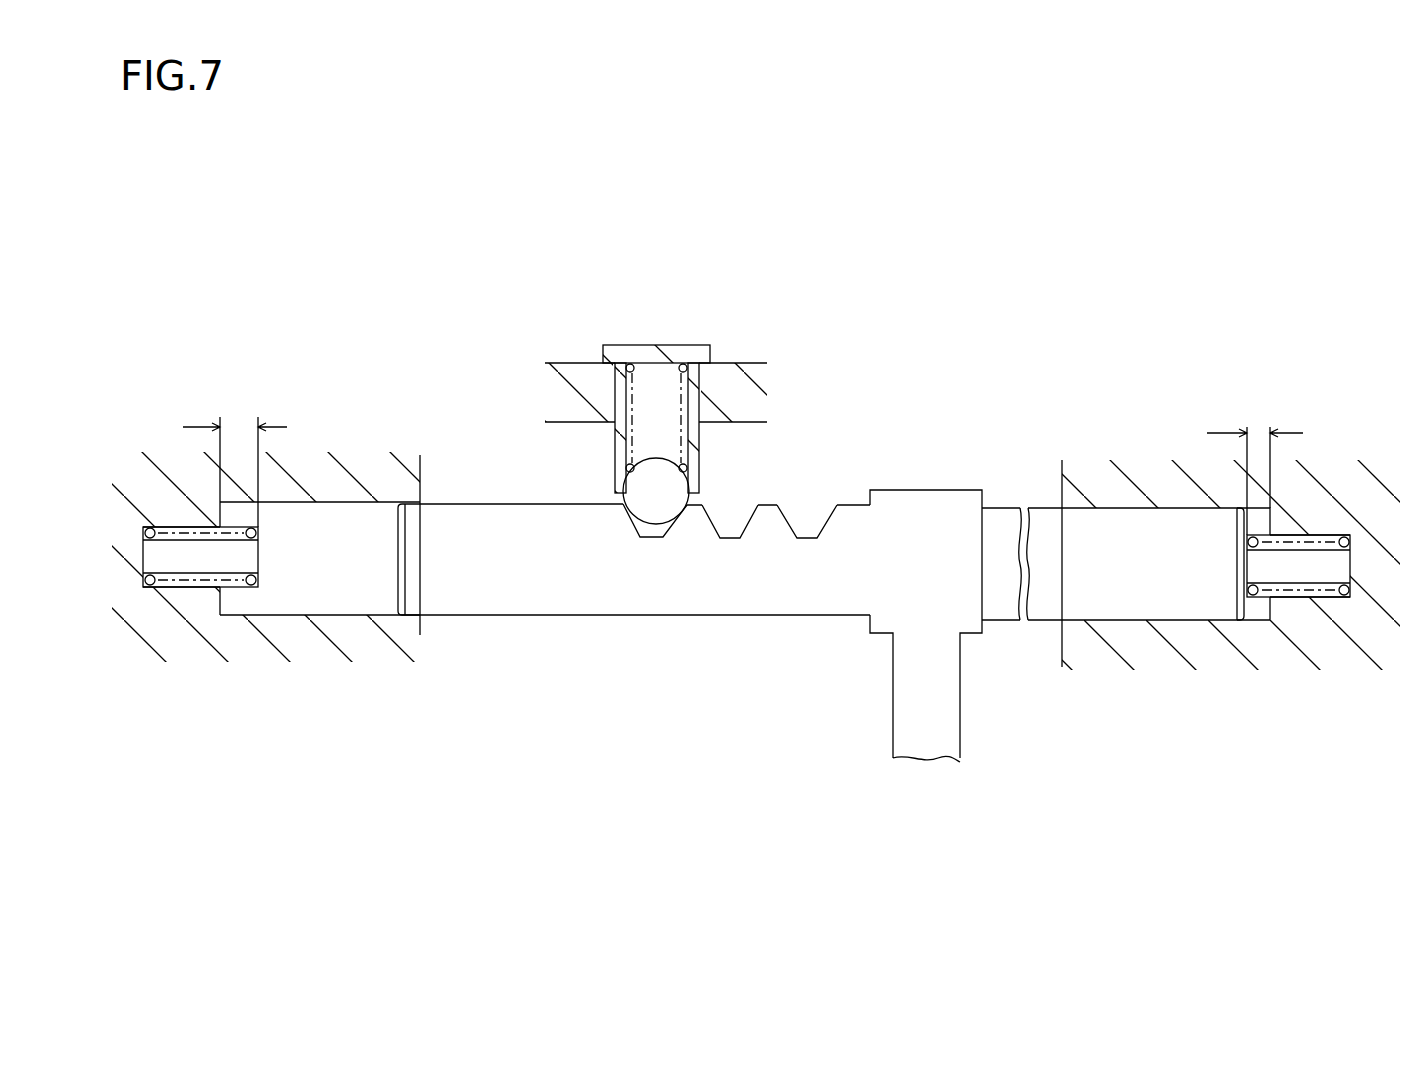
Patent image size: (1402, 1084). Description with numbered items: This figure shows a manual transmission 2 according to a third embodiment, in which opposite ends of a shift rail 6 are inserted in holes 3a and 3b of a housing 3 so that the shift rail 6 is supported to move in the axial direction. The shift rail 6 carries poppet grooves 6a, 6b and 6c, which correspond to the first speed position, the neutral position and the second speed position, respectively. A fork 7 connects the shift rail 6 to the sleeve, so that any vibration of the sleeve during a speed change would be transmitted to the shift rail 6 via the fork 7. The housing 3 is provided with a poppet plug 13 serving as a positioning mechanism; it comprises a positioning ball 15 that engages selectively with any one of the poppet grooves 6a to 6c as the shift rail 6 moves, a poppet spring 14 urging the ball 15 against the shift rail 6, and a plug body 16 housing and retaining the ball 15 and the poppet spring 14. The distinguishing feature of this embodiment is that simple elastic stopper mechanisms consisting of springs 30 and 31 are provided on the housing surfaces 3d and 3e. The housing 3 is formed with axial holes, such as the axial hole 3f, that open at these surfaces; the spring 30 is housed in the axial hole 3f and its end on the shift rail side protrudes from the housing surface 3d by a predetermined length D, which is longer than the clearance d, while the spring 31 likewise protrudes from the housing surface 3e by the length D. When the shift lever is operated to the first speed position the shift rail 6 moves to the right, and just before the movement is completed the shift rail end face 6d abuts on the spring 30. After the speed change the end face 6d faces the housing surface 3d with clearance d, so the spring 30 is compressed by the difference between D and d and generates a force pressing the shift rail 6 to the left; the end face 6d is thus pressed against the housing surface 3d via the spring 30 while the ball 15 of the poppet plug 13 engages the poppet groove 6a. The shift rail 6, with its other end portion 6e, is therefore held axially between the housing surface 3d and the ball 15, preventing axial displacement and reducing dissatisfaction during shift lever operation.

The shift mechanism 2 is at (1012, 281).
The housing 3 is at (1217, 380).
The hole 3a is at (1113, 620).
The hole 3b is at (278, 615).
The housing surface 3d is at (1265, 608).
The housing surface 3e is at (226, 600).
The axial hole 3f is at (1323, 578).
The shift rail 6 is at (1007, 496).
The poppet groove 6a is at (647, 537).
The poppet groove 6b is at (730, 530).
The poppet groove 6c is at (807, 530).
The shift rail end face 6d is at (1252, 603).
The rod end portion 6e is at (391, 597).
The fork 7 is at (917, 730).
The poppet plug 13 is at (639, 331).
The poppet spring 14 is at (687, 360).
The positioning ball 15 is at (678, 490).
The plug body 16 is at (603, 350).
The spring 30 is at (1347, 533).
The spring 31 is at (147, 583).
The protrusion length D is at (235, 457).
The clearance d is at (1255, 464).